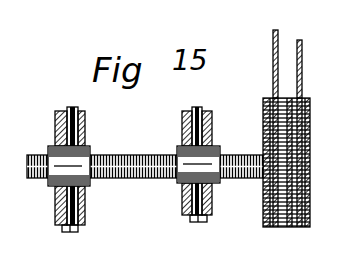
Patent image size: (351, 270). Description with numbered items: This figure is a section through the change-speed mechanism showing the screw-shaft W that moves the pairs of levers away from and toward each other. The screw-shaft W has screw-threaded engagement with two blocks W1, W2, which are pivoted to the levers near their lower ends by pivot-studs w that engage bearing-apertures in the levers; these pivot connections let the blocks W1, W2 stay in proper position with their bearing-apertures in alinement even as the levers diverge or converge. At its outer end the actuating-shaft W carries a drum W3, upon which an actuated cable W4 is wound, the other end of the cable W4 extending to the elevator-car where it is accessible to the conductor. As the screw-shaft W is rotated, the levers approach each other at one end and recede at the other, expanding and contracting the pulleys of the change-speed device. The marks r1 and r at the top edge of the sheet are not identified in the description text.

The screw-shaft W is at (130, 154).
The block W1 is at (78, 162).
The block W2 is at (215, 144).
The drum W3 is at (265, 232).
The actuated cable W4 is at (300, 40).
The pivot-studs w is at (70, 108).
The part r1 is at (88, 4).
The part r is at (176, 2).